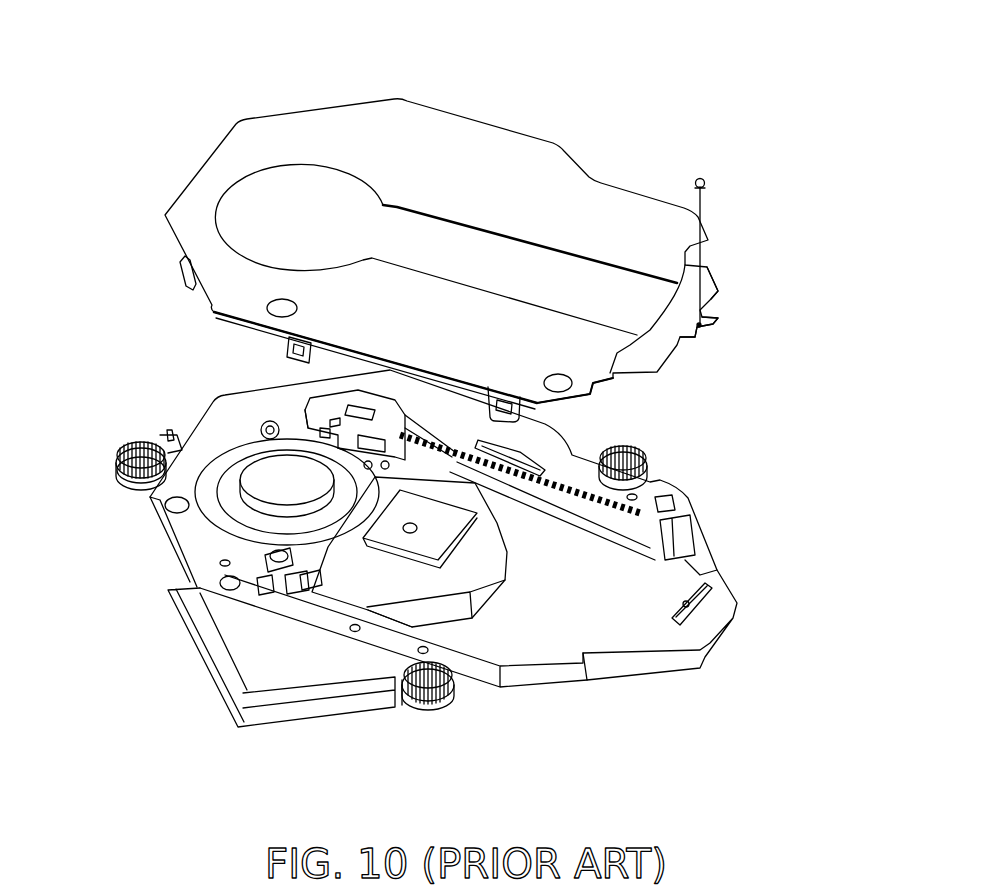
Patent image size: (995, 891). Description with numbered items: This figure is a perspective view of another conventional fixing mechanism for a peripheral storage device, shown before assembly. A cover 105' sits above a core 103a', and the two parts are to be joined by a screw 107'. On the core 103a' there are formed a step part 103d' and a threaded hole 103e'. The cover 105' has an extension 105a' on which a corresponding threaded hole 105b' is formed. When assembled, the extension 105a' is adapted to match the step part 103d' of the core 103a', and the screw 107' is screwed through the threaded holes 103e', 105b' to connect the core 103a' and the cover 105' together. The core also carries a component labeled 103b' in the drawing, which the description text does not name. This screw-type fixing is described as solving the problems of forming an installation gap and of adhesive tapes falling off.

The cover 105' is at (441, 216).
The screw 107' is at (711, 195).
The extension 105a' is at (768, 283).
The threaded hole 105b' is at (762, 347).
The core 103a' is at (481, 525).
The optical pickup 103b' is at (447, 631).
The threaded hole 103e' is at (760, 604).
The step part 103d' is at (736, 644).